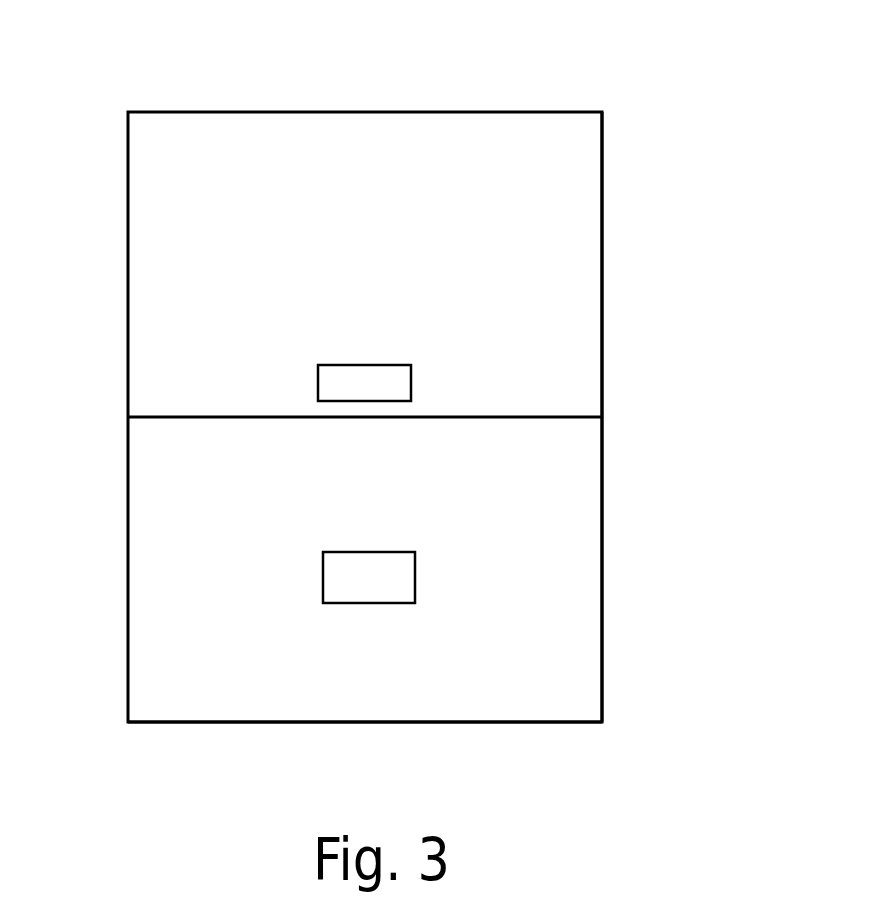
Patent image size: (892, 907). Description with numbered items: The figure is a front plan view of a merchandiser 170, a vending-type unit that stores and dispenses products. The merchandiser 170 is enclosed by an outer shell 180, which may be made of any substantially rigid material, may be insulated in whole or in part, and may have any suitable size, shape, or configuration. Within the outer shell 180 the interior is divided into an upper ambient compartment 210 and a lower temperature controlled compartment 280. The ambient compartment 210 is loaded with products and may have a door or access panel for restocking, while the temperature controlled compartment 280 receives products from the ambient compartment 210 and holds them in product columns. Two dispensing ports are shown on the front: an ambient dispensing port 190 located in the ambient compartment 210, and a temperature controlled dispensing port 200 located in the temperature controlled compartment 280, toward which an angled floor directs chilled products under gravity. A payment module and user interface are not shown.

The merchandiser 170 is at (120, 93).
The outer shell 180 is at (602, 272).
The ambient dispensing port 190 is at (318, 365).
The temperature controlled dispensing port 200 is at (323, 552).
The ambient compartment 210 is at (520, 158).
The temperature controlled compartment 280 is at (513, 508).